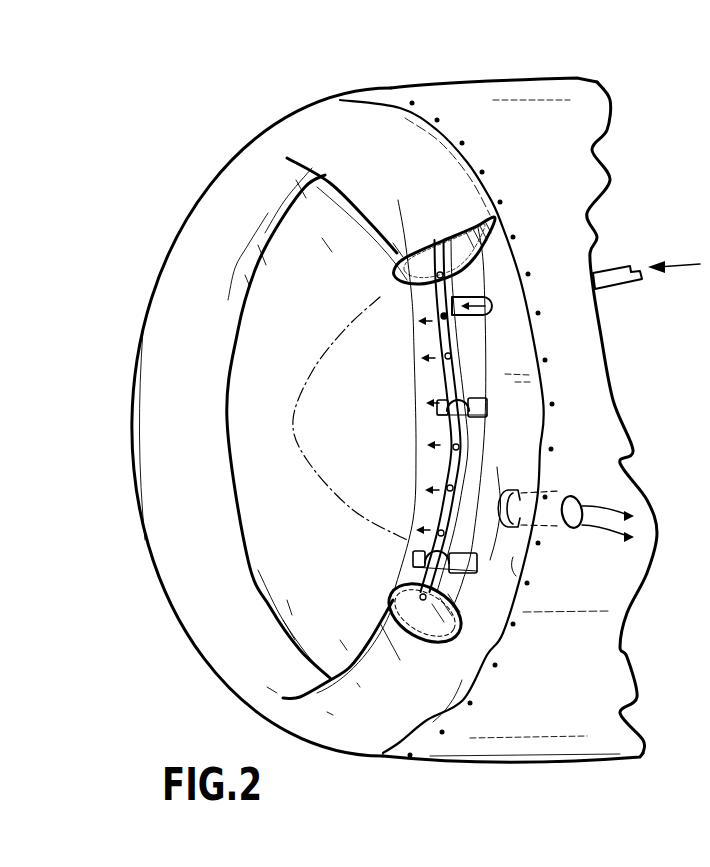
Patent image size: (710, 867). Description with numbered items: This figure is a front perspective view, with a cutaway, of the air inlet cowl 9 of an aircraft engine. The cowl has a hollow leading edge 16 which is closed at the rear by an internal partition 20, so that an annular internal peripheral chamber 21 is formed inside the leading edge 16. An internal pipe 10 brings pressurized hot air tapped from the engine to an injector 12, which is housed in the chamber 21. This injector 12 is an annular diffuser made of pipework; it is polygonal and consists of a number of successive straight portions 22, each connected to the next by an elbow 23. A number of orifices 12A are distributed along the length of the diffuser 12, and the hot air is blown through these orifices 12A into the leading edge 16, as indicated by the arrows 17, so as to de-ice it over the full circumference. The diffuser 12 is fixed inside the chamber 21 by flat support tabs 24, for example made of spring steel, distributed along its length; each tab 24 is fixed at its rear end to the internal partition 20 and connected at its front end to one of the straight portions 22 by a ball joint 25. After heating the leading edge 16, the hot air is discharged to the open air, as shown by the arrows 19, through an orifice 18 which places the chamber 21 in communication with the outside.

The air inlet cowl 9 is at (480, 103).
The internal pipe 10 is at (628, 283).
The injector 12 is at (459, 366).
The orifices 12A is at (420, 320).
The hollow leading edge 16 is at (190, 208).
The arrows 17 is at (432, 357).
The orifice 18 is at (580, 498).
The arrows 19 is at (597, 532).
The internal partition 20 is at (516, 576).
The annular internal peripheral chamber 21 is at (433, 643).
The straight portions 22 is at (494, 477).
The elbow 23 is at (443, 460).
The flat support tabs 24 is at (506, 627).
The ball joint 25 is at (440, 410).